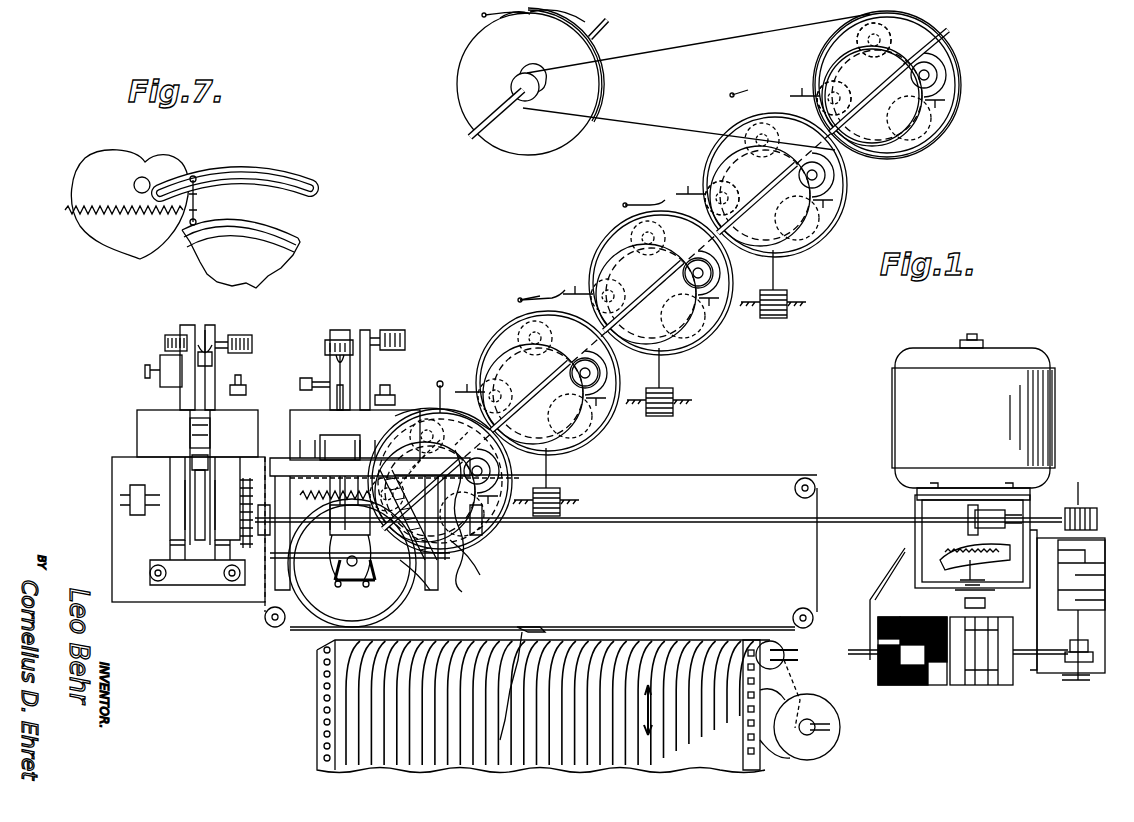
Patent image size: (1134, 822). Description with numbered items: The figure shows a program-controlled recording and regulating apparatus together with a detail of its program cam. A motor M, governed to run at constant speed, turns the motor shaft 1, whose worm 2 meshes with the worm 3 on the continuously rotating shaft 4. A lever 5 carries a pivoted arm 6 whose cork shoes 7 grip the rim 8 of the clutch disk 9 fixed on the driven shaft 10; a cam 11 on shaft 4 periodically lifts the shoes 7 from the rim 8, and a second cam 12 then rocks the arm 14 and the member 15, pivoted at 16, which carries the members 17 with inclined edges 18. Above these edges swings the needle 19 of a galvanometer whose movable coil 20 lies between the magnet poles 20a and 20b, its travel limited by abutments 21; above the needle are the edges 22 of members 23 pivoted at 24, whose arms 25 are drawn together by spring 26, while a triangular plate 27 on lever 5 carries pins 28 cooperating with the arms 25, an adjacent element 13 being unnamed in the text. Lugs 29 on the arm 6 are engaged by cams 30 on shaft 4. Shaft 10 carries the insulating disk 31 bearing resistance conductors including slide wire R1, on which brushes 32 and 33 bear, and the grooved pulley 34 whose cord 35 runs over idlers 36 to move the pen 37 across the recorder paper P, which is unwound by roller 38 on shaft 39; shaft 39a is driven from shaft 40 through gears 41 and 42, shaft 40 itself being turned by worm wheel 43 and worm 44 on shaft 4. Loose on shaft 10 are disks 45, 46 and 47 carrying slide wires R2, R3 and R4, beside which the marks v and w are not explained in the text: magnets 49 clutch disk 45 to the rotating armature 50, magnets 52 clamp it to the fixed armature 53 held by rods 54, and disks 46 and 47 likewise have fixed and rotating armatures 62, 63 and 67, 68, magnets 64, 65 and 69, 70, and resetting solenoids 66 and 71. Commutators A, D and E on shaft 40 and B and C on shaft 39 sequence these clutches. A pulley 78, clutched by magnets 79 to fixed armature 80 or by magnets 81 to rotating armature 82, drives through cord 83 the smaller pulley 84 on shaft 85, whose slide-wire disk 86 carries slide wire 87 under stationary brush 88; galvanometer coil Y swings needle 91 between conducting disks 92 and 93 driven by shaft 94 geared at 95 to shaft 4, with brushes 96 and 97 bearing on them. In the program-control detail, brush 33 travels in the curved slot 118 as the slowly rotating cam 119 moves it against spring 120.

In FIG. 1, the motor shaft 1 is at (985, 512).
In FIG. 1, the worm 2 is at (965, 530).
In FIG. 1, the worm 3 is at (968, 512).
In FIG. 1, the shaft 4 is at (750, 518).
In FIG. 1, the lever 5 is at (300, 600).
In FIG. 1, the arm 6 is at (400, 590).
In FIG. 1, the shoe 7 is at (418, 582).
In FIG. 1, the rim 8 is at (320, 615).
In FIG. 1, the clutch disk 9 is at (935, 558).
In FIG. 1, the driven shaft 10 is at (950, 32).
In FIG. 1, the cam 11 is at (346, 528).
In FIG. 1, the second cam 12 is at (389, 501).
In FIG. 1, the link 13 is at (335, 572).
In FIG. 1, the arm 14 is at (430, 458).
In FIG. 1, the member 15 is at (420, 440).
In FIG. 1, the pivot 16 is at (292, 438).
In FIG. 1, the members 17 is at (415, 386).
In FIG. 1, the inclined edges 18 is at (330, 430).
In FIG. 1, the needle 19 is at (320, 400).
In FIG. 1, the movable coil 20 is at (365, 400).
In FIG. 1, the magnet pole 20a is at (320, 430).
In FIG. 1, the magnet pole 20b is at (445, 408).
In FIG. 1, the abutments 21 is at (330, 450).
In FIG. 1, the edges 22 is at (340, 445).
In FIG. 1, the members 23 is at (349, 418).
In FIG. 1, the pivots 24 is at (442, 416).
In FIG. 1, the arms 25 is at (348, 525).
In FIG. 1, the spring 26 is at (312, 484).
In FIG. 1, the triangular plate 27 is at (372, 580).
In FIG. 1, the pins 28 is at (358, 580).
In FIG. 1, the lugs 29 is at (455, 570).
In FIG. 1, the cams 30 is at (440, 560).
In FIG. 7, the insulating disk 31 is at (272, 262).
In FIG. 1, the insulating disk 31 is at (495, 545).
In FIG. 1, the brush 32 is at (445, 380).
In FIG. 7, the brush 33 is at (197, 201).
In FIG. 1, the brush 33 is at (448, 385).
In FIG. 1, the grooved pulley 34 is at (510, 520).
In FIG. 1, the cord 35 is at (680, 478).
In FIG. 1, the idlers 36 is at (815, 482).
In FIG. 1, the pen 37 is at (528, 626).
In FIG. 1, the roller 38 is at (782, 648).
In FIG. 1, the shaft 39 is at (800, 662).
In FIG. 1, the shaft 39a is at (850, 650).
In FIG. 1, the shaft 40 is at (1080, 628).
In FIG. 1, the gear 41 is at (1090, 648).
In FIG. 1, the gear 42 is at (1070, 680).
In FIG. 1, the worm wheel 43 is at (1090, 508).
In FIG. 1, the worm 44 is at (1077, 486).
In FIG. 1, the disk 45 is at (620, 425).
In FIG. 1, the disk 46 is at (695, 340).
In FIG. 1, the disk 47 is at (815, 232).
In FIG. 1, the electro-magnets 49 is at (560, 325).
In FIG. 1, the armature disk 50 is at (505, 345).
In FIG. 1, the electro-magnets 52 is at (510, 365).
In FIG. 1, the disk armature 53 is at (548, 455).
In FIG. 1, the rods 54 is at (800, 90).
In FIG. 1, the fixed armature disk 62 is at (680, 370).
In FIG. 1, the rotating armature disk 63 is at (700, 325).
In FIG. 1, the magnets 64 is at (715, 272).
In FIG. 1, the magnets 65 is at (635, 228).
In FIG. 1, the resetting solenoid 66 is at (680, 410).
In FIG. 1, the fixed armature disk 67 is at (780, 238).
In FIG. 1, the rotating armature disk 68 is at (830, 212).
In FIG. 1, the magnets 69 is at (715, 182).
In FIG. 1, the magnets 70 is at (760, 128).
In FIG. 1, the resetting solenoid 71 is at (792, 305).
In FIG. 1, the pulley 78 is at (940, 125).
In FIG. 1, the magnets 79 is at (830, 82).
In FIG. 1, the fixed armature 80 is at (898, 140).
In FIG. 1, the magnets 81 is at (890, 33).
In FIG. 1, the armature disk 82 is at (935, 108).
In FIG. 1, the cord 83 is at (685, 45).
In FIG. 1, the smaller pulley 84 is at (520, 100).
In FIG. 1, the shaft 85 is at (606, 30).
In FIG. 1, the slide wire disk 86 is at (580, 137).
In FIG. 1, the slide wire 87 is at (554, 11).
In FIG. 1, the stationary brush 88 is at (484, 16).
In FIG. 1, the needle 91 is at (195, 445).
In FIG. 1, the conducting disk 92 is at (175, 470).
In FIG. 1, the conducting disk 93 is at (200, 515).
In FIG. 1, the shaft 94 is at (195, 505).
In FIG. 1, the gearing 95 is at (215, 590).
In FIG. 1, the brush 96 is at (175, 548).
In FIG. 1, the brush 97 is at (180, 590).
In FIG. 7, the curved slot 118 is at (238, 164).
In FIG. 7, the cam 119 is at (110, 160).
In FIG. 7, the spring 120 is at (98, 236).
In FIG. 1, the commutator A is at (1079, 605).
In FIG. 1, the commutator B is at (981, 669).
In FIG. 1, the commutator C is at (912, 669).
In FIG. 1, the commutator D is at (1117, 552).
In FIG. 1, the commutator E is at (1116, 600).
In FIG. 1, the motor M is at (1050, 413).
In FIG. 1, the recorder paper P is at (620, 770).
In FIG. 1, the galvanometer coil Y is at (190, 430).
In FIG. 7, the slide wire R1 is at (290, 232).
In FIG. 1, the slide wire R2 is at (548, 305).
In FIG. 1, the slide wire R3 is at (675, 215).
In FIG. 1, the slide wire R4 is at (790, 108).
In FIG. 1, the pointer v is at (626, 195).
In FIG. 1, the pointer w is at (633, 199).